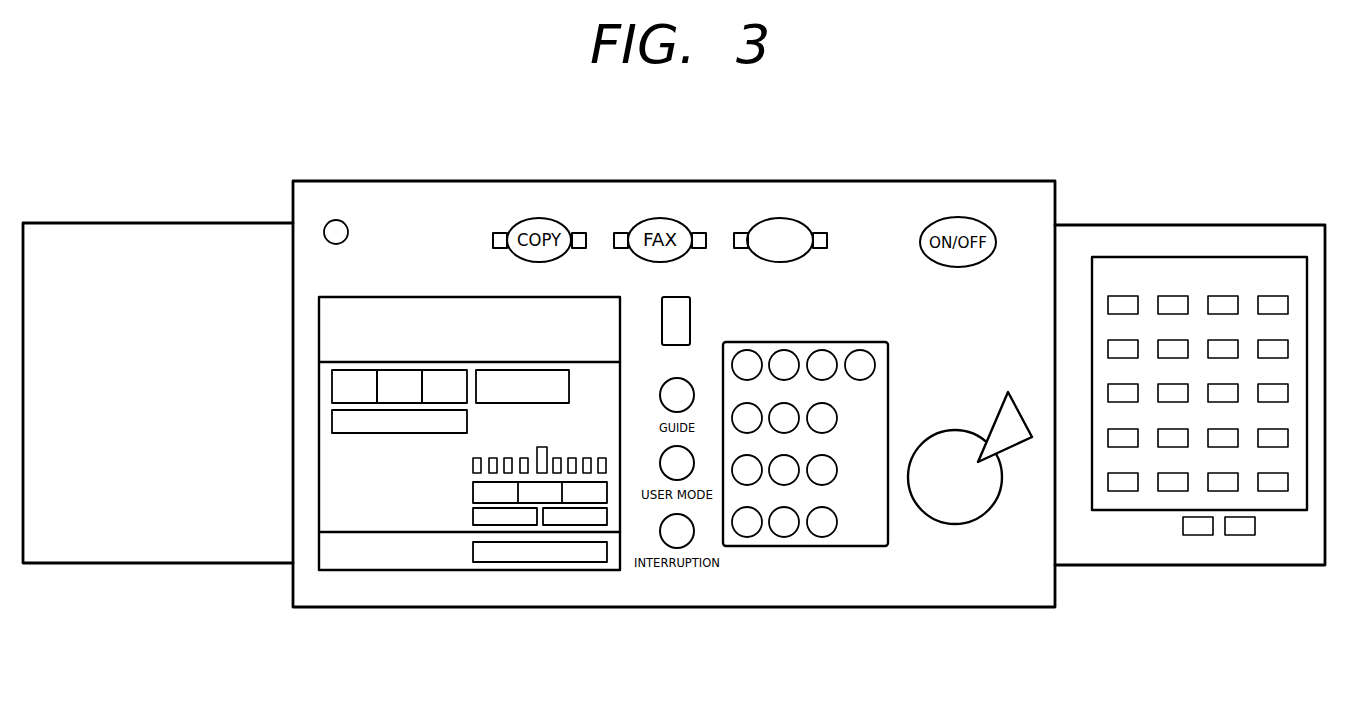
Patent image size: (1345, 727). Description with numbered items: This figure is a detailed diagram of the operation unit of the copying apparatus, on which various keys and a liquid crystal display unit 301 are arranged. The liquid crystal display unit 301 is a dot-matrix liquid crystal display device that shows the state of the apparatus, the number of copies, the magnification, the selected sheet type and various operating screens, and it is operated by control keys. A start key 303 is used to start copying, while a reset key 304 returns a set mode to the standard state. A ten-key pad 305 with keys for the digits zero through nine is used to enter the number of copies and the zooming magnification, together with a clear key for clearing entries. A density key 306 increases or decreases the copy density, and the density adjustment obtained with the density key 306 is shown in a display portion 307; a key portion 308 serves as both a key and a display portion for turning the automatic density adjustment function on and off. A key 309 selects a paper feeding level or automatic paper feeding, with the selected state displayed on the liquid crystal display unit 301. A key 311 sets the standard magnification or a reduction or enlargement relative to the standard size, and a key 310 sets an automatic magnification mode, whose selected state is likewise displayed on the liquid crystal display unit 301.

The liquid crystal display unit 301 is at (427, 389).
The start key 303 is at (953, 525).
The reset key 304 is at (691, 316).
The ten-key pad 305 is at (805, 547).
The density key 306 is at (472, 493).
The display portion 307 is at (472, 465).
The key portion 308 is at (535, 478).
The paper feeding key 309 is at (557, 369).
The automatic magnification key 310 is at (388, 433).
The magnification key 311 is at (331, 385).